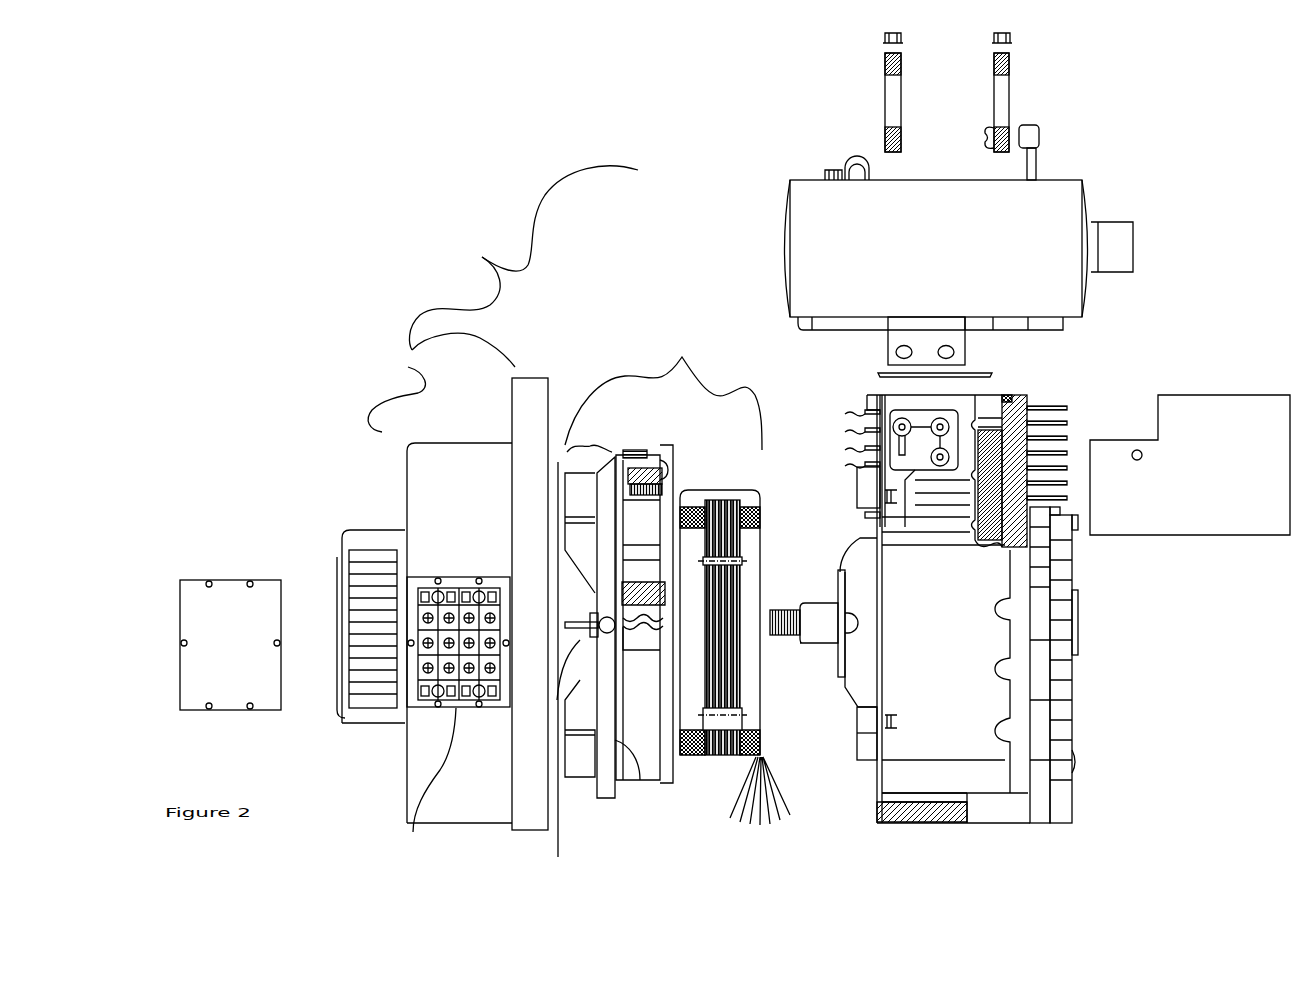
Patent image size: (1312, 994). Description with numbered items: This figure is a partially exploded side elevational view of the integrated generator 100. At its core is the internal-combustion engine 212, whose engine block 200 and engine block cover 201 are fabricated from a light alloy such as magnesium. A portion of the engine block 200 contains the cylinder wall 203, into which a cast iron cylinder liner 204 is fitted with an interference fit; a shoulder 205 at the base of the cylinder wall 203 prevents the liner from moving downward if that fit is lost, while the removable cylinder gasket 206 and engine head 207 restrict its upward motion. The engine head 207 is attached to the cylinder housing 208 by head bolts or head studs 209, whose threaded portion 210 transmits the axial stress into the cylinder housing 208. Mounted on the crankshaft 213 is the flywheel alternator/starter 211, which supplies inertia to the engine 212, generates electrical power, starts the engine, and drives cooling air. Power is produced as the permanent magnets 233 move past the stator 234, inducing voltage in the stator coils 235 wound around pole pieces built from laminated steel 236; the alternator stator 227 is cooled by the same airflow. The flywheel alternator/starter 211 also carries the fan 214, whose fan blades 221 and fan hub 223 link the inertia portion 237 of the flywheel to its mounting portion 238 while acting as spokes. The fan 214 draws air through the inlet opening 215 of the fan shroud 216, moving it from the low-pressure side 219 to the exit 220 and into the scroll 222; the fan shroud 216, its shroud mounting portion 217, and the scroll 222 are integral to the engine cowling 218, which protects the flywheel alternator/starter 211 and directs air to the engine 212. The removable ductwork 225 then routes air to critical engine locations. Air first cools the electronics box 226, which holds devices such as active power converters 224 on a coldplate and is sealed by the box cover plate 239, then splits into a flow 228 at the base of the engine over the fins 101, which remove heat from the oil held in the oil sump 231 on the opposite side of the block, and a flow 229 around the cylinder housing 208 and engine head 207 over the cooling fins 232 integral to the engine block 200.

The integrated generator 100 is at (523, 258).
The fins 101 is at (918, 823).
The engine block 200 is at (945, 673).
The engine block cover 201 is at (1068, 812).
The cylinder wall 203 is at (1010, 396).
The cylinder liner 204 is at (1004, 394).
The shoulder 205 is at (1012, 548).
The cylinder gasket 206 is at (880, 375).
The engine head 207 is at (1075, 327).
The cylinder housing 208 is at (1022, 396).
The head bolts or head studs 209 is at (1010, 98).
The threaded portion of the fastener 210 is at (985, 138).
The flywheel alternator/starter 211 is at (663, 395).
The internal-combustion engine 212 is at (1108, 682).
The crankshaft 213 is at (830, 645).
The fan 214 is at (589, 438).
The inlet opening 215 is at (358, 587).
The fan shroud 216 is at (406, 480).
The shroud mounting portion 217 is at (511, 400).
The engine cowling 218 is at (441, 382).
The low-pressure side 219 is at (552, 671).
The exit of the flywheel alternator/starter 220 is at (572, 782).
The fan blades 221 is at (598, 722).
The scroll 222 is at (557, 410).
The fan hub 223 is at (587, 767).
The active power converters 224 is at (429, 708).
The removable ductwork 225 is at (1200, 537).
The electronics box 226 is at (428, 779).
The alternator stator 227 is at (780, 690).
The flow at the base of the engine 228 is at (847, 812).
The flow around the cylinder housing and engine head 229 is at (853, 447).
The oil sump 231 is at (940, 775).
The cooling fins 232 is at (865, 522).
The permanent magnets 233 is at (670, 468).
The stator 234 is at (760, 496).
The stator coils 235 is at (772, 518).
The laminated steel 236 is at (722, 758).
The inertia portion 237 is at (650, 472).
The mounting portion 238 is at (672, 675).
The box cover plate 239 is at (230, 711).